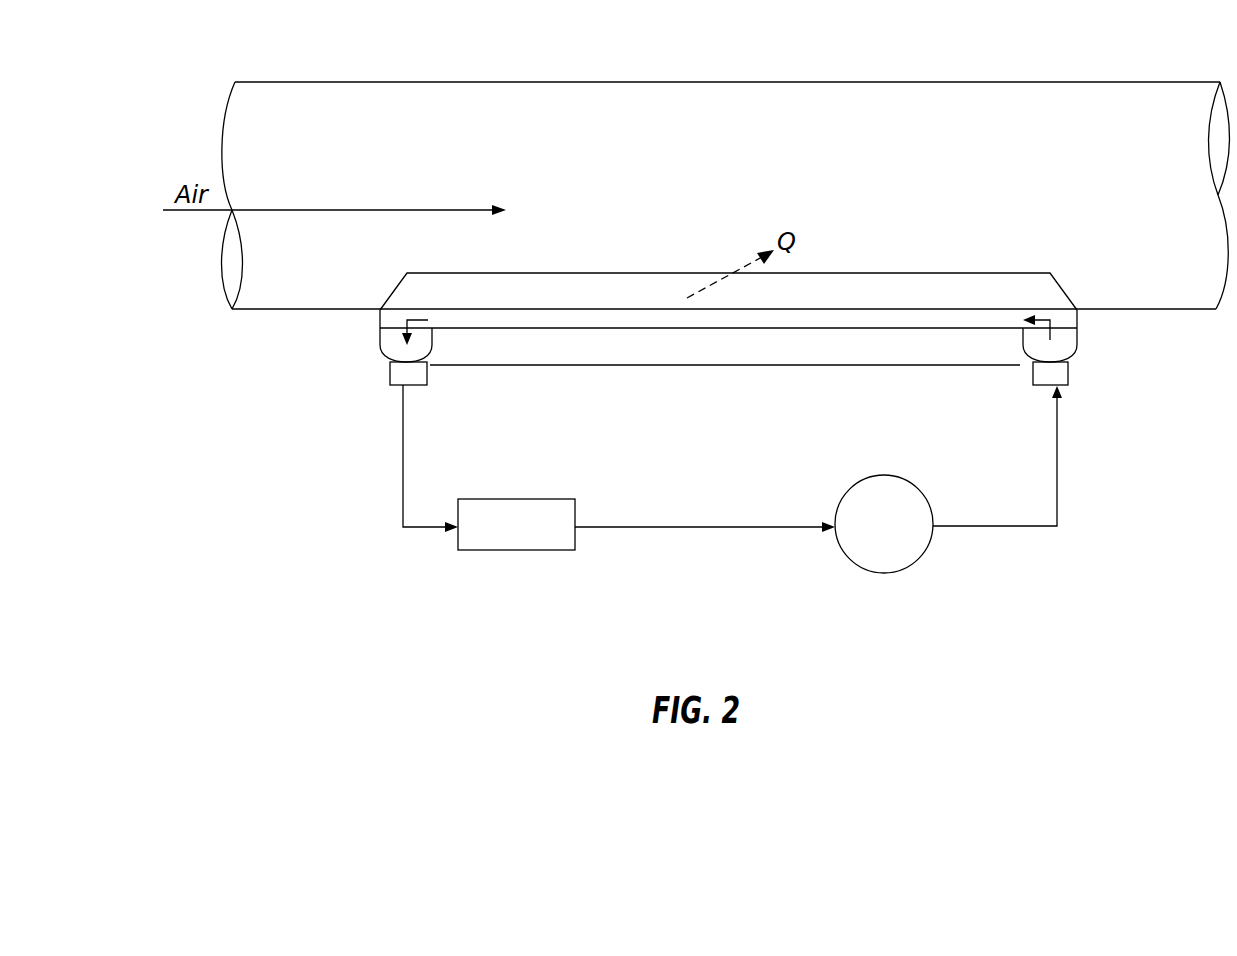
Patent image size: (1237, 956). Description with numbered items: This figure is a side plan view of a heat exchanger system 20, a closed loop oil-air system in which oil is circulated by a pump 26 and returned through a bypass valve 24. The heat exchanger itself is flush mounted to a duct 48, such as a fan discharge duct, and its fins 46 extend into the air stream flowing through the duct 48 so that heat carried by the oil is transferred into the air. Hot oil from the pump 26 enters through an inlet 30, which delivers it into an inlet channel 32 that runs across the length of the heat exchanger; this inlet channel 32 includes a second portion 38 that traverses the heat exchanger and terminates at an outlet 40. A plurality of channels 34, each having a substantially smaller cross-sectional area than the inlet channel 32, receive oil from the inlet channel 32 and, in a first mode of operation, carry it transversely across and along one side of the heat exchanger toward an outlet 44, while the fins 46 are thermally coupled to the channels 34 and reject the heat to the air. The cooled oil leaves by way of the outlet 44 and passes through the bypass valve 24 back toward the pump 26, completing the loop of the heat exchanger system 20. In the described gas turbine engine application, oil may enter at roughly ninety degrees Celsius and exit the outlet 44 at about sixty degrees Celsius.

The heat exchanger system 20 is at (360, 458).
The bypass valve 24 is at (515, 551).
The pump 26 is at (883, 574).
The inlet 30 is at (1040, 386).
The inlet channel 32 is at (1080, 338).
The plurality of channels 34 is at (568, 320).
The second portion 38 is at (767, 362).
The outlet 40 is at (365, 364).
The outlet 44 is at (395, 386).
The fins 46 is at (900, 273).
The duct 48 is at (653, 81).